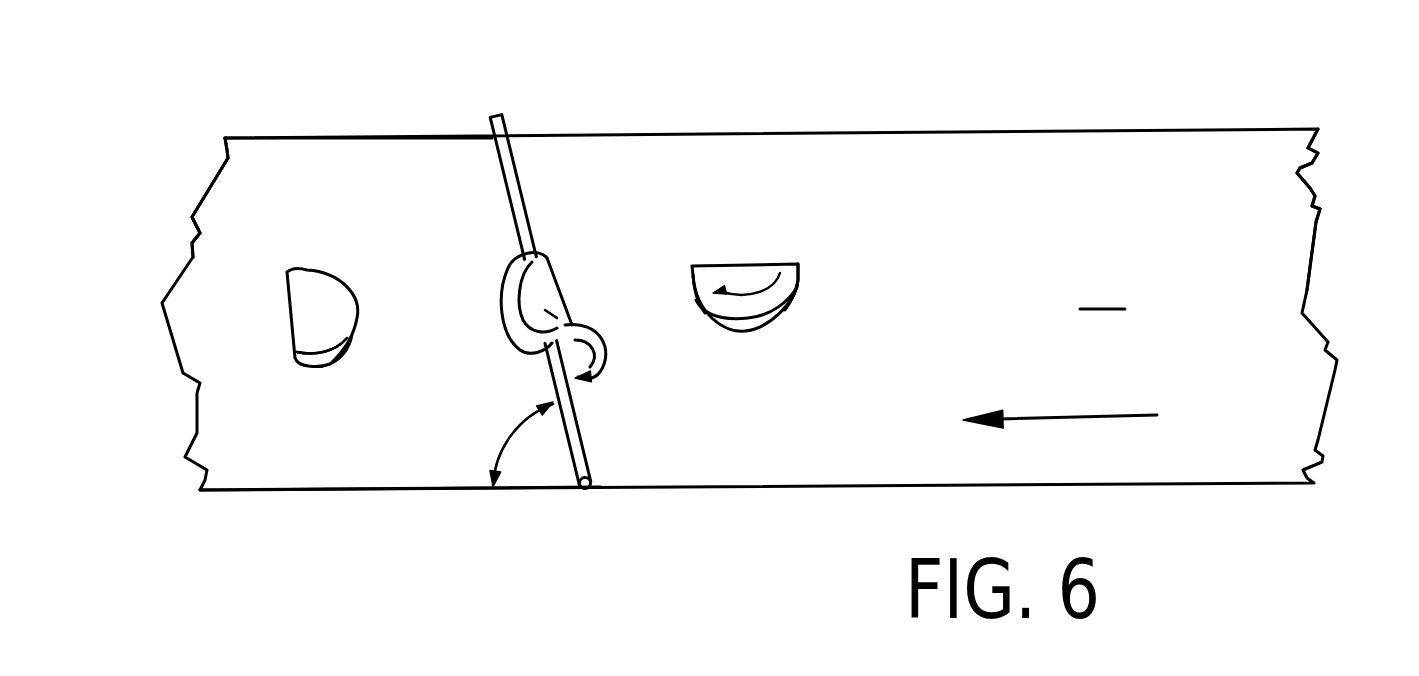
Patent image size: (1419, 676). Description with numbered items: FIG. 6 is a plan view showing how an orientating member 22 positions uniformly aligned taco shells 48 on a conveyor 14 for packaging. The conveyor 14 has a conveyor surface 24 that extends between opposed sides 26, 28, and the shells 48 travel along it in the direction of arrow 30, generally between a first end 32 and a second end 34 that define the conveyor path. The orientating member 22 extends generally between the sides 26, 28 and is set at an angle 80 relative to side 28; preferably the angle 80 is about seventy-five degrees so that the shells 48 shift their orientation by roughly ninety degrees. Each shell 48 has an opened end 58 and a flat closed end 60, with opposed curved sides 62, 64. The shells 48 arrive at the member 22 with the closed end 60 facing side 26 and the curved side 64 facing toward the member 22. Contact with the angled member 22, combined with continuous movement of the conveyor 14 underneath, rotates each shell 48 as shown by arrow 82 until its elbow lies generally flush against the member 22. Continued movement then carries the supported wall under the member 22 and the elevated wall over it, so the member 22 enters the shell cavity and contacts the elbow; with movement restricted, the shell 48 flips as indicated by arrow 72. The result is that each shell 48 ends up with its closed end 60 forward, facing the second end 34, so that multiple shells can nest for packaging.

The conveyor 14 is at (1125, 121).
The orientating member 22 is at (505, 108).
The conveyor surface 24 is at (1107, 281).
The first side of conveyor 26 is at (325, 137).
The second side of conveyor 28 is at (332, 489).
The arrow indicating direction of movement 30 is at (1060, 397).
The first end of conveyor 32 is at (1252, 177).
The second end of conveyor 34 is at (168, 272).
The taco shell 48 is at (751, 256).
The opened end 58 is at (335, 357).
The closed end 60 is at (283, 327).
The curved side 62 is at (798, 296).
The curved side 64 is at (705, 305).
The arrow indicating flipping 72 is at (600, 350).
The angle of orientating member 80 is at (507, 436).
The arrow indicating rotation 82 is at (519, 300).